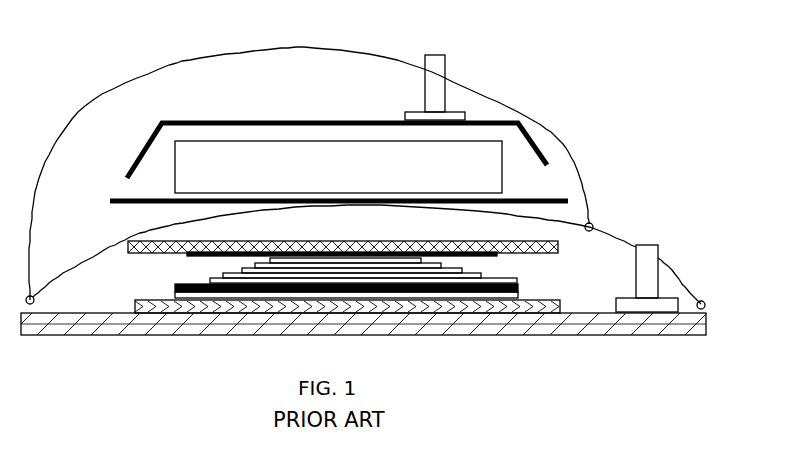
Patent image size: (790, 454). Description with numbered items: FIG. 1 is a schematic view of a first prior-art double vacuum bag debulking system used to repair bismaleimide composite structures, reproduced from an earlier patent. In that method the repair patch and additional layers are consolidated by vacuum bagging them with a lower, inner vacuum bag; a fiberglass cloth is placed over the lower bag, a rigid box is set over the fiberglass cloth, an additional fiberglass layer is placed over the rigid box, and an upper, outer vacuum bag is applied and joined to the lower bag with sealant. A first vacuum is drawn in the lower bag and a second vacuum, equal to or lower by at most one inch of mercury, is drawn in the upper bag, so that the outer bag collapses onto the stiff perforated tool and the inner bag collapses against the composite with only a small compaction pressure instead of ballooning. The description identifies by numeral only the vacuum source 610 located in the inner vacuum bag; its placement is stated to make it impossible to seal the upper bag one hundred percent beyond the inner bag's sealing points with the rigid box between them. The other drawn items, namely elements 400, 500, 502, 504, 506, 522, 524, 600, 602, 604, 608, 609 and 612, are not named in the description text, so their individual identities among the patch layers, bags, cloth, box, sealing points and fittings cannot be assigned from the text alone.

The die stack 400 is at (466, 266).
The sensor assembly 500 is at (369, 257).
The base substrate 502 is at (397, 350).
The bonding layer 504 is at (118, 336).
The shield cover 506 is at (314, 120).
The cover plate 522 is at (557, 246).
The inner housing 524 is at (97, 252).
The cap assembly post 600 is at (402, 38).
The mounting plate 602 is at (519, 198).
The component block 604 is at (175, 180).
The left hinge pin 608 is at (38, 303).
The right hinge pin 609 is at (593, 223).
The vacuum source 610 is at (645, 245).
The outer dome housing 612 is at (193, 66).